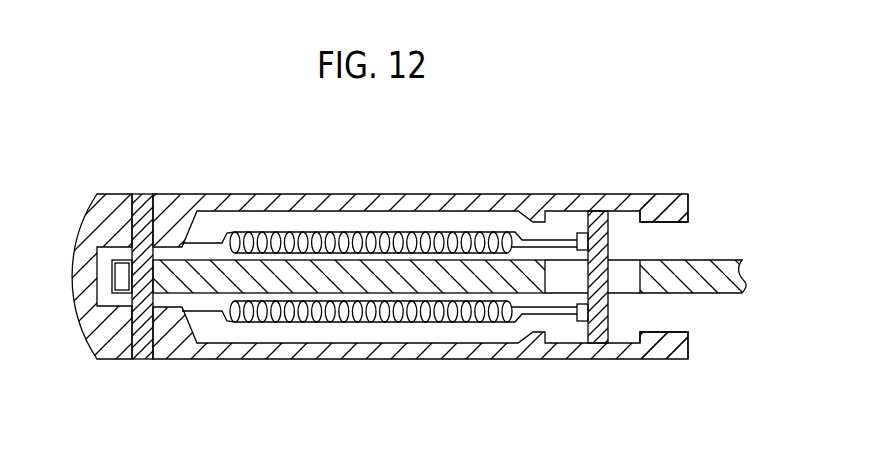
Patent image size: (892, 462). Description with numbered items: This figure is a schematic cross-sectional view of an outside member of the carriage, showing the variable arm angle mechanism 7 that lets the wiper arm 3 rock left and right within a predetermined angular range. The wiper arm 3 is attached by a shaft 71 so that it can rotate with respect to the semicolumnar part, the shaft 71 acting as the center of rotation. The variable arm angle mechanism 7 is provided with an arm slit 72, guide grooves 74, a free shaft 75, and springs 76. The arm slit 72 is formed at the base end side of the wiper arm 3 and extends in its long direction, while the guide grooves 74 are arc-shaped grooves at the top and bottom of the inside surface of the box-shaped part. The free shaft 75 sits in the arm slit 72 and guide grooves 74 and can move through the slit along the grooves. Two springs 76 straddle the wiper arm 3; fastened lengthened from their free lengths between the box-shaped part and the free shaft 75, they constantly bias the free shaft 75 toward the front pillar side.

The variable arm angle mechanism 7 is at (570, 194).
The shaft 71 is at (143, 215).
The arm slit 72 is at (625, 288).
The guide grooves 74 is at (628, 196).
The free shaft 75 is at (612, 241).
The springs 76 is at (448, 229).
The wiper arm 3 is at (370, 281).